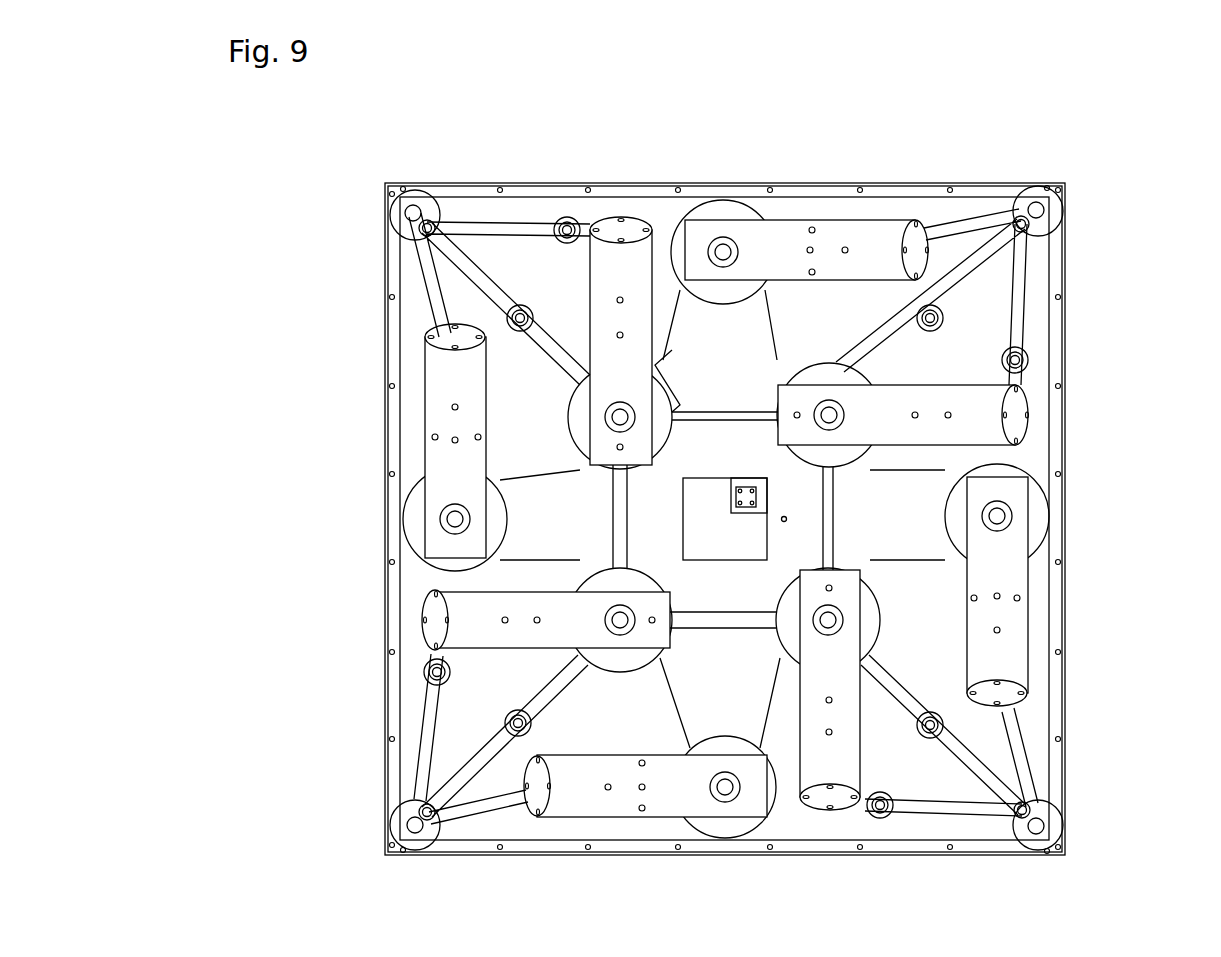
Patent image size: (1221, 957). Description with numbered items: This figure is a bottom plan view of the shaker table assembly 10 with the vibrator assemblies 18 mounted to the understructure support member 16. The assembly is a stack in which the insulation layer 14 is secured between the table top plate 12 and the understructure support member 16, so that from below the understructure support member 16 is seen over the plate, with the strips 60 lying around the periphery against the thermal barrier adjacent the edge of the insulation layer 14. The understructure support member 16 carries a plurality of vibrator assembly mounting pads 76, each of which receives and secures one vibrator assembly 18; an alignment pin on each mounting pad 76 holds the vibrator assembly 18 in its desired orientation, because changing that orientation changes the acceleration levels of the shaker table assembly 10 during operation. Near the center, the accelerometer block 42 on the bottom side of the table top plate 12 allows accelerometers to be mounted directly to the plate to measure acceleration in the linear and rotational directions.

The shaker table assembly 10 is at (1090, 158).
The table top plate 12 is at (1070, 513).
The insulation layer 14 is at (940, 655).
The understructure support member 16 is at (1027, 298).
The vibrator assembly 18 is at (768, 252).
The accelerometer block 42 is at (740, 505).
The strips 60 is at (1063, 396).
The vibrator assembly mounting pad 76 is at (830, 367).